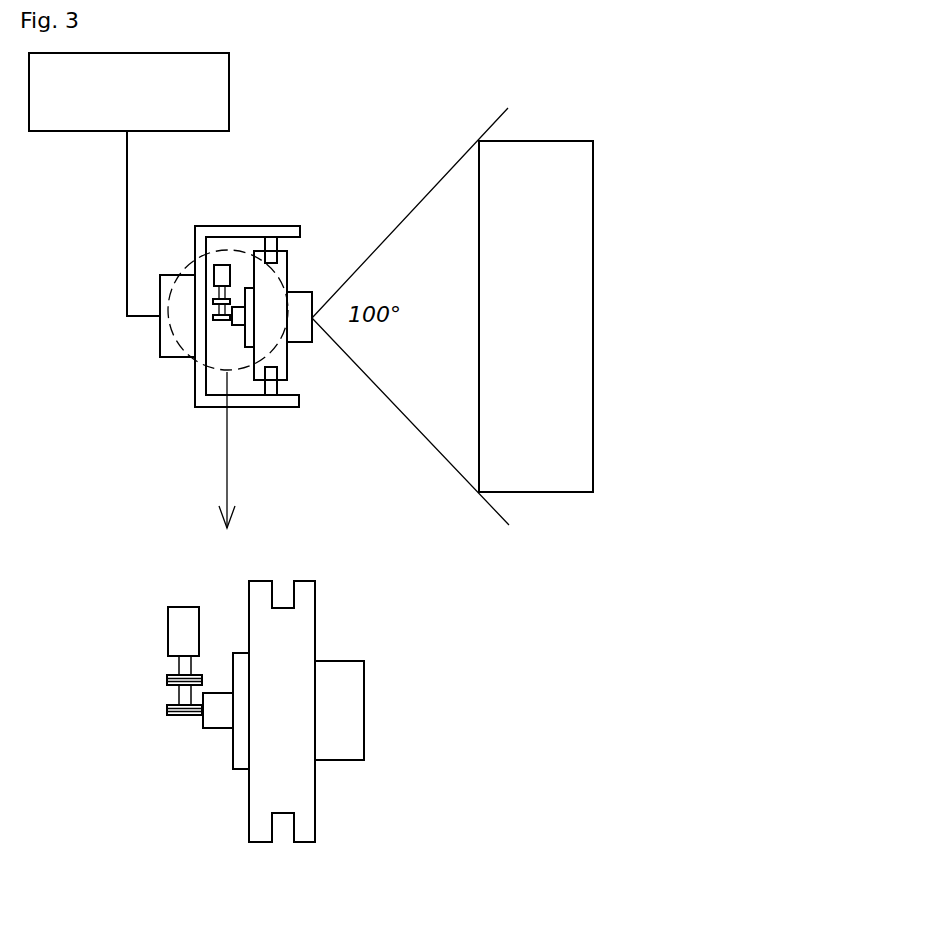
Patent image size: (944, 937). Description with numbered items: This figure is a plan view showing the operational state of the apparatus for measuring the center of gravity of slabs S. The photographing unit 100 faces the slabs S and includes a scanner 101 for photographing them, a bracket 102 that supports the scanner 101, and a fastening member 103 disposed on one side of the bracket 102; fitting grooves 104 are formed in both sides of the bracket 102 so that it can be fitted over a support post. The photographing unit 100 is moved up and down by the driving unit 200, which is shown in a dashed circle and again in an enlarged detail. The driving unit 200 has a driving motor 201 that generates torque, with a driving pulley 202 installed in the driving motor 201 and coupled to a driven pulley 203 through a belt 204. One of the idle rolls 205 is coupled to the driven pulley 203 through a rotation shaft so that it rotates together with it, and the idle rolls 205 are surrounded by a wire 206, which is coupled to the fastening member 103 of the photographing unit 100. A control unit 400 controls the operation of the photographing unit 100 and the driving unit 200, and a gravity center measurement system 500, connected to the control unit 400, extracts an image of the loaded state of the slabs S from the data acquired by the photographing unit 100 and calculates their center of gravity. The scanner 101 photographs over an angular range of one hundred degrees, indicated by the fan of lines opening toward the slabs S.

The gravity center measurement system 500 is at (229, 98).
The control unit 400 is at (165, 350).
The photographing unit 100 is at (331, 574).
The scanner 101 is at (353, 710).
The bracket 102 is at (298, 793).
The fastening member 103 is at (217, 722).
The fitting grooves 104 is at (281, 828).
The driving unit 200 is at (160, 476).
The driving motor 201 is at (177, 626).
The driving pulley 202 is at (200, 677).
The driven pulley 203 is at (165, 678).
The belt 204 is at (167, 682).
The idle rolls 205 is at (167, 712).
The wire 206 is at (205, 718).
The slabs S is at (562, 482).